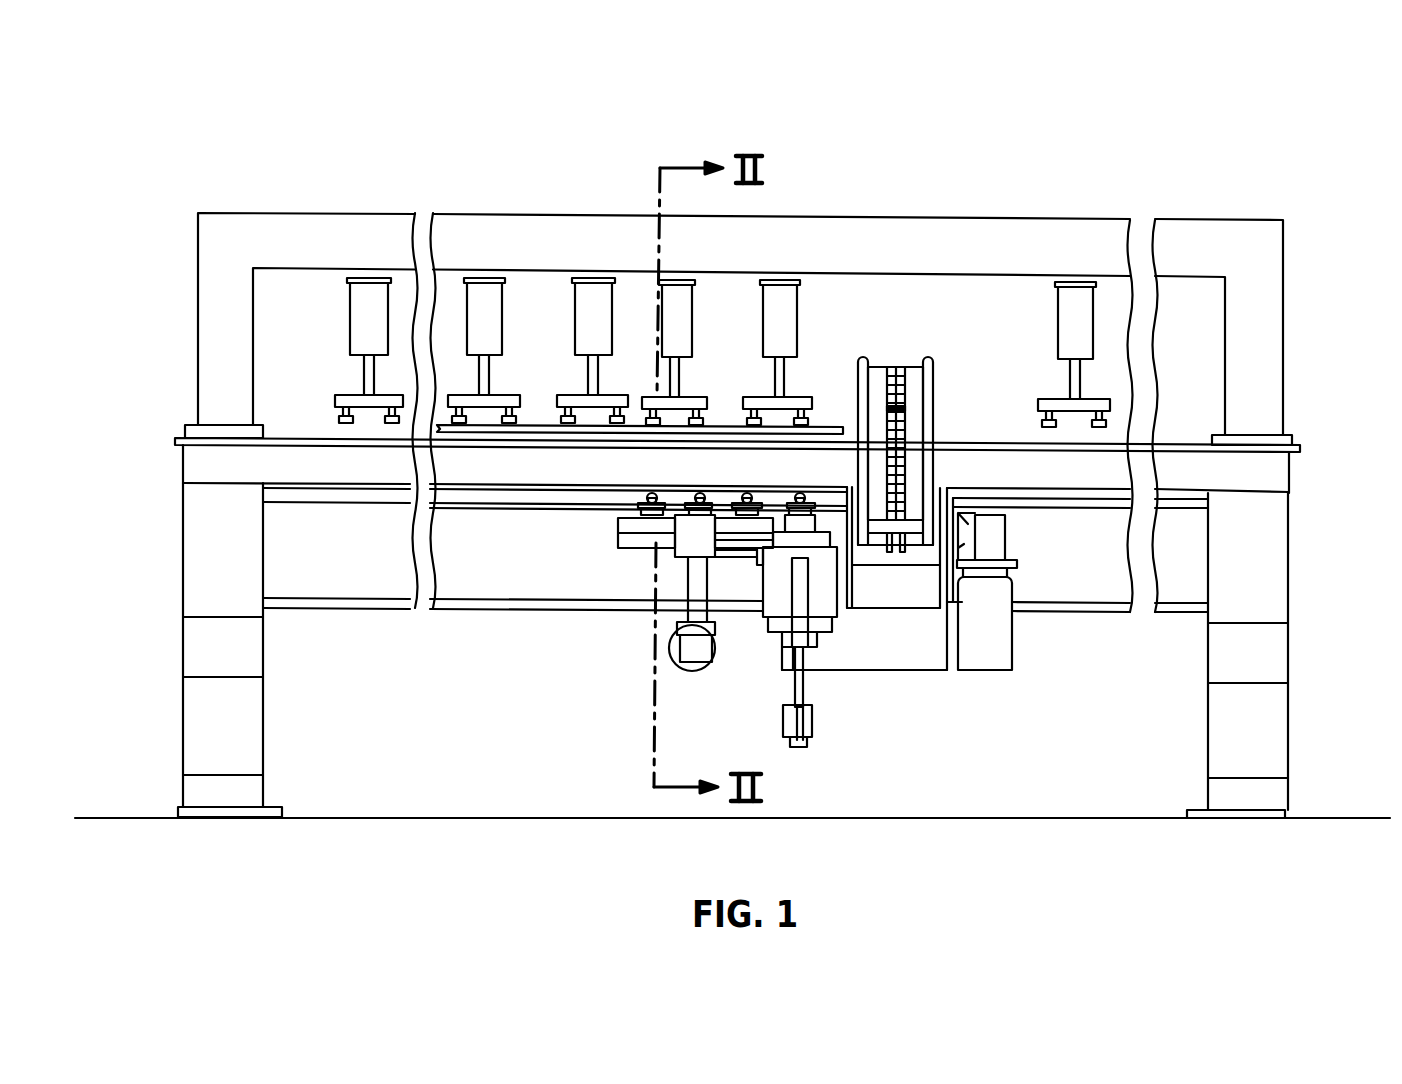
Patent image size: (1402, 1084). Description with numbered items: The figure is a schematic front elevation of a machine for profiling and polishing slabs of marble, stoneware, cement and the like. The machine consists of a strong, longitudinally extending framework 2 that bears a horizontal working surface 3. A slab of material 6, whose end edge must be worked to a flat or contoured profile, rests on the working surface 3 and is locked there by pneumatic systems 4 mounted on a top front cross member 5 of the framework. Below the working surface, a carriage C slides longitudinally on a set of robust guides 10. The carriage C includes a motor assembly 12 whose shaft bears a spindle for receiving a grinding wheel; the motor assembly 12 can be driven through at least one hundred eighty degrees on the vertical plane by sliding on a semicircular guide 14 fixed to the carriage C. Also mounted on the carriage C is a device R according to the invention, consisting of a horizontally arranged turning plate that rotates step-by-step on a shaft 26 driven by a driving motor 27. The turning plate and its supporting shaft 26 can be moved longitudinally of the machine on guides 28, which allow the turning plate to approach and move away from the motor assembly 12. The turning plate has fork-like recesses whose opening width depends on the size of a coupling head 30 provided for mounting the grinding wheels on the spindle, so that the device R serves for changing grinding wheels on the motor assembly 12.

The framework 2 is at (195, 577).
The horizontal working surface 3 is at (307, 435).
The pneumatic systems 4 is at (595, 290).
The top front cross member 5 is at (918, 230).
The slab of material 6 is at (830, 433).
The guides 10 is at (308, 495).
The motor assembly 12 is at (773, 605).
The semicircular guide 14 is at (915, 387).
The shaft 26 is at (690, 612).
The driving motor 27 is at (695, 667).
The guides 28 is at (620, 532).
The coupling head 30 is at (647, 502).
The device R is at (620, 572).
The carriage C is at (854, 693).